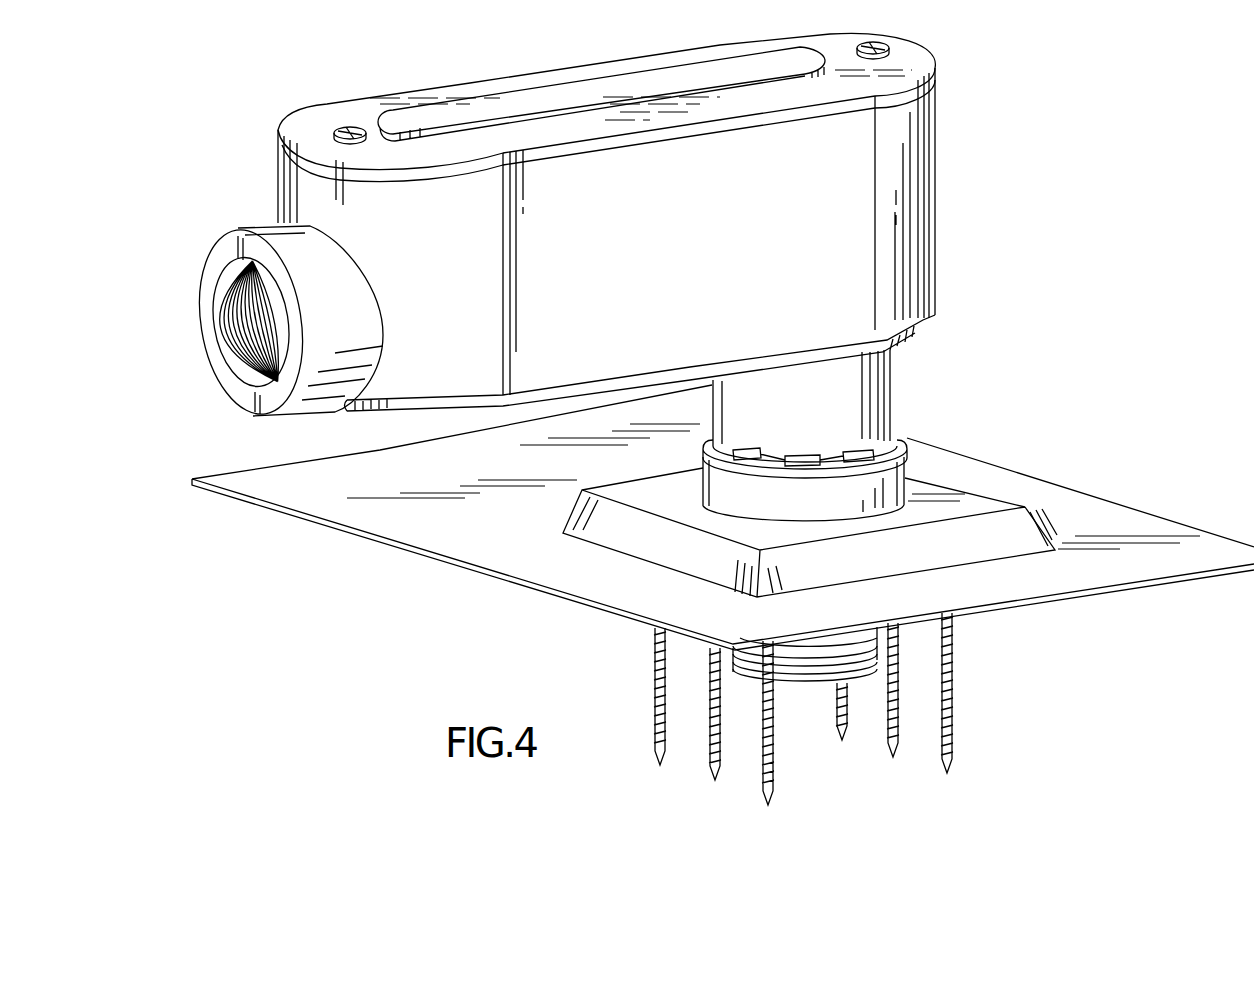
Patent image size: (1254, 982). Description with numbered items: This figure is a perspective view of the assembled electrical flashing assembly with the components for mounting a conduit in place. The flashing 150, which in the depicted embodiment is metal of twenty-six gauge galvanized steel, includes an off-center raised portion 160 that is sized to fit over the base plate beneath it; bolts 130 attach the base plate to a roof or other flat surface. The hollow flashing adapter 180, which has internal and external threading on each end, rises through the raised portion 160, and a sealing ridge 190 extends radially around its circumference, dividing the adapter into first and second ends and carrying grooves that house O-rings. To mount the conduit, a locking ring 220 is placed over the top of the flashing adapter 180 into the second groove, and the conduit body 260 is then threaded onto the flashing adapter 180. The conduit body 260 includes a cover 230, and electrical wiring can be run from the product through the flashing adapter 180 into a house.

The bolts 130 is at (953, 672).
The flashing 150 is at (1113, 510).
The raised portion 160 is at (647, 548).
The flashing adapter 180 is at (797, 682).
The sealing ridge 190 is at (890, 483).
The locking ring 220 is at (903, 437).
The cover 230 is at (903, 70).
The conduit body 260 is at (918, 326).